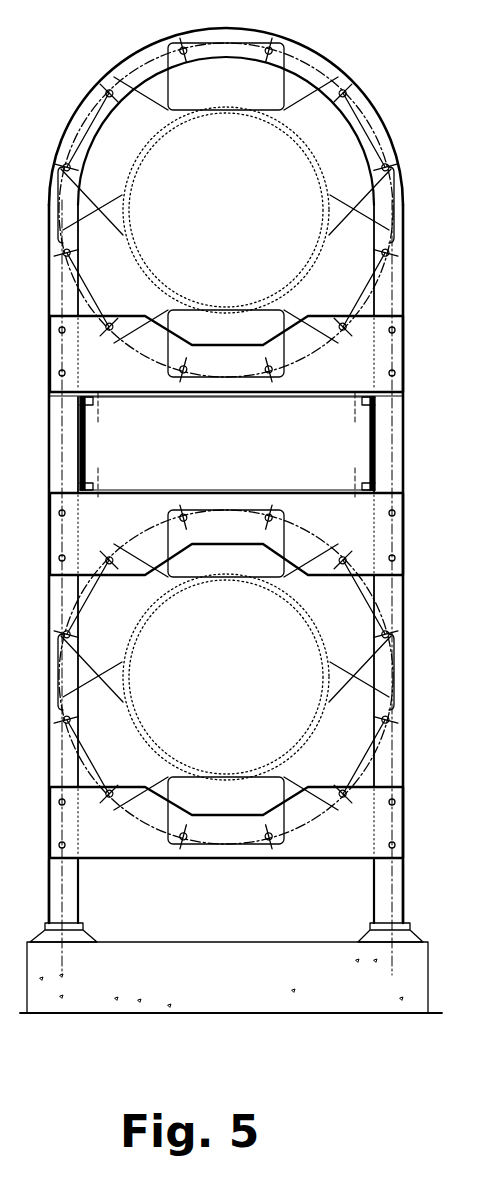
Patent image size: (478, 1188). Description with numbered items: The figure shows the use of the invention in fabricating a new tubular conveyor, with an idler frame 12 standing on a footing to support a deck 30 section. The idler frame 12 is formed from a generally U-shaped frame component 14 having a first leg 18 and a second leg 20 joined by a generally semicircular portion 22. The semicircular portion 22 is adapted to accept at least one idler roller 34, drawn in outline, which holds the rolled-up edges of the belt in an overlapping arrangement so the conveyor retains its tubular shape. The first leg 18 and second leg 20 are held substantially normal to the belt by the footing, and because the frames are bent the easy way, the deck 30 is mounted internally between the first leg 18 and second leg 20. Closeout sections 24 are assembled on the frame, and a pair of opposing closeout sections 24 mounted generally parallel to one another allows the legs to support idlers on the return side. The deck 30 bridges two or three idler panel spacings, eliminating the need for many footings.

The idler frame 12 is at (418, 463).
The U-shaped frame component 14 is at (405, 613).
The first leg 18 is at (477, 751).
The second leg 20 is at (455, 912).
The semicircular portion 22 is at (372, 98).
The closeout section 24 is at (276, 397).
The deck 30 is at (80, 420).
The idler roller 34 is at (132, 289).